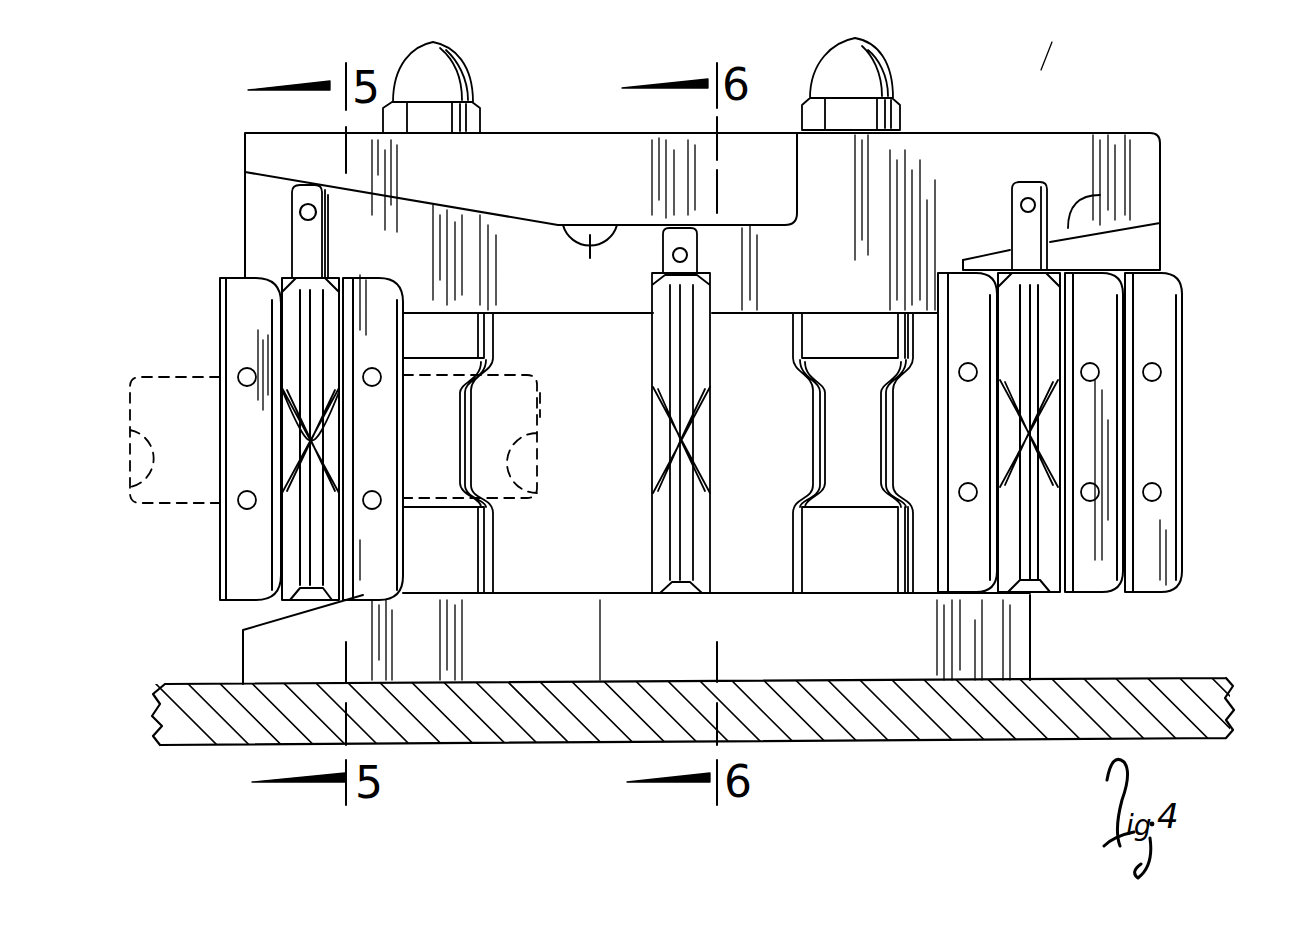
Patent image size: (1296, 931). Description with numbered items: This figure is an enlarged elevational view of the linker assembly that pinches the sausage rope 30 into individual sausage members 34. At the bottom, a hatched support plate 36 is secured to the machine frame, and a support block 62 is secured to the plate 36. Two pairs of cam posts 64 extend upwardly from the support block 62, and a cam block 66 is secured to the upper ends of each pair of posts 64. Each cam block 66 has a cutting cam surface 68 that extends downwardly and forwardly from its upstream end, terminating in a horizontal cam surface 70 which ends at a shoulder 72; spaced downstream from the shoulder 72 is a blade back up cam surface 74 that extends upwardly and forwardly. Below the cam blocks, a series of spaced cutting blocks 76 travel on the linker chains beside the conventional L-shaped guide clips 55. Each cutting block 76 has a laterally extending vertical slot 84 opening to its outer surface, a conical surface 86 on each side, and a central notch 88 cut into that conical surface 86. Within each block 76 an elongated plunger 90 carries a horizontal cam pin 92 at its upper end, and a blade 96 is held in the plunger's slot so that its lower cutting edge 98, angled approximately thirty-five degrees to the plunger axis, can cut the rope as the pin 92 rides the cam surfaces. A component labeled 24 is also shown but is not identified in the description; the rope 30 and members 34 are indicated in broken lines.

The clamping fixture assembly 24 is at (1046, 36).
The sausage rope 30 is at (160, 357).
The sausage members 34 is at (207, 377).
The support plate 36 is at (1110, 687).
The L-shaped guide clips 55 is at (1093, 270).
The support block 62 is at (1012, 613).
The cam posts 64 is at (792, 530).
The cam block 66 is at (1180, 132).
The cutting cam surface 68 is at (245, 177).
The horizontal cam surface 70 is at (557, 226).
The shoulder 72 is at (800, 183).
The blade back up cam surface 74 is at (1100, 195).
The cutting blocks 76 is at (276, 280).
The vertical slot 84 is at (455, 52).
The conical surface 86 is at (1052, 425).
The notch 88 is at (653, 422).
The plunger 90 is at (306, 238).
The cam pin 92 is at (1028, 203).
The blade 96 is at (673, 447).
The lower cutting edge 98 is at (1070, 352).